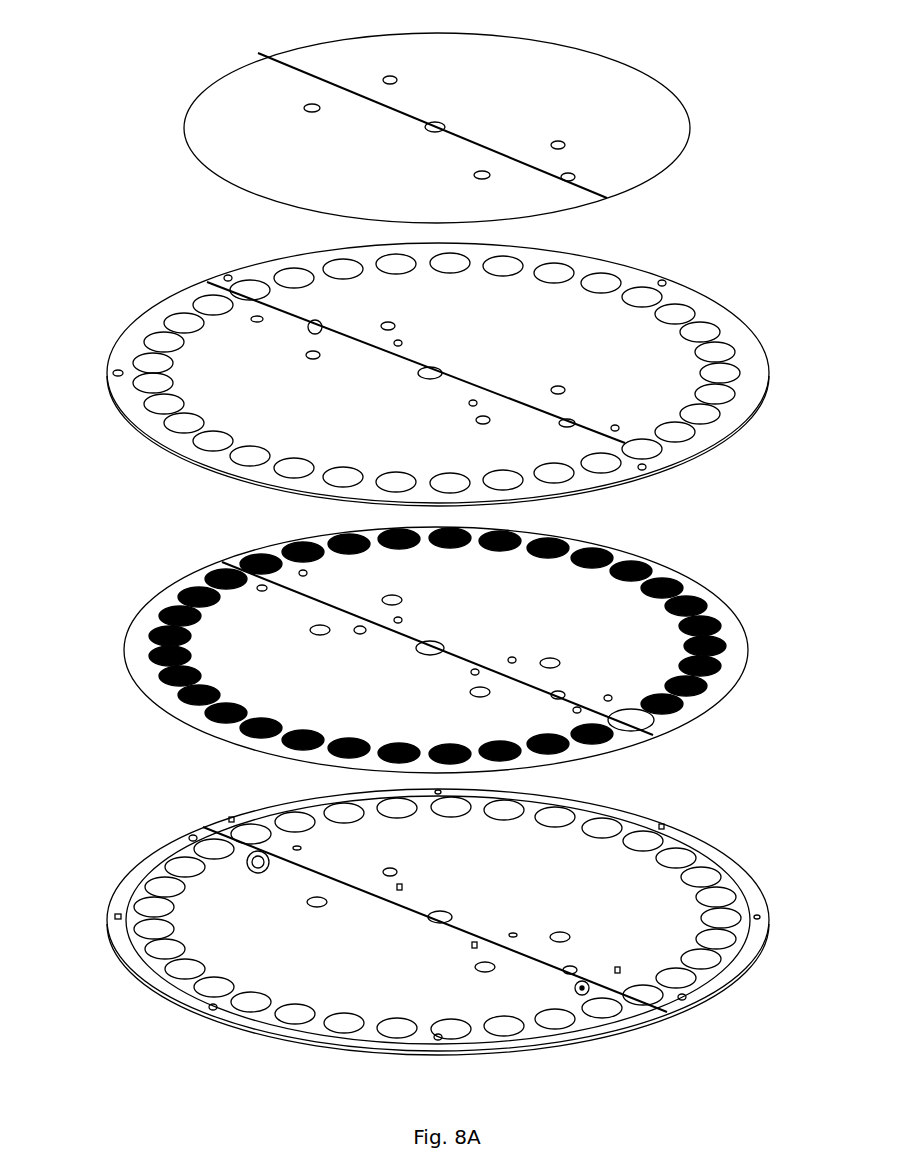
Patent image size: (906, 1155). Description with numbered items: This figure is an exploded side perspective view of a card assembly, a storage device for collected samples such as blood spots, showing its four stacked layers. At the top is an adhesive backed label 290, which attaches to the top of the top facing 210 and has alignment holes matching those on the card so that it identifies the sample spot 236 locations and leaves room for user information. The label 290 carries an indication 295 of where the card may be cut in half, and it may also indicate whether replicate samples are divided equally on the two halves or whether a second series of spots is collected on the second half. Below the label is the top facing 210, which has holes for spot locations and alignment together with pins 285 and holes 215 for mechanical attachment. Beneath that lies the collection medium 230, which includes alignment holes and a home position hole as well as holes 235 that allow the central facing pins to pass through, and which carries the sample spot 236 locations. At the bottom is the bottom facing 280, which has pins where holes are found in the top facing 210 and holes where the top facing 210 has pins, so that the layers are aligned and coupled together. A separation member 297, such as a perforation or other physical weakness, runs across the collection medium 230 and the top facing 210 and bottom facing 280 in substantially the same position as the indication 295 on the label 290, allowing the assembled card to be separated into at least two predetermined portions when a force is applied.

The adhesive backed label 290 is at (182, 128).
The indication 295 is at (298, 73).
The top facing 210 is at (107, 392).
The separation member 297 is at (308, 327).
The collection medium 230 is at (123, 650).
The sample spot 236 is at (677, 582).
The holes 235 is at (256, 589).
The bottom facing 280 is at (107, 940).
The pins 285 is at (247, 861).
The holes 215 is at (589, 987).